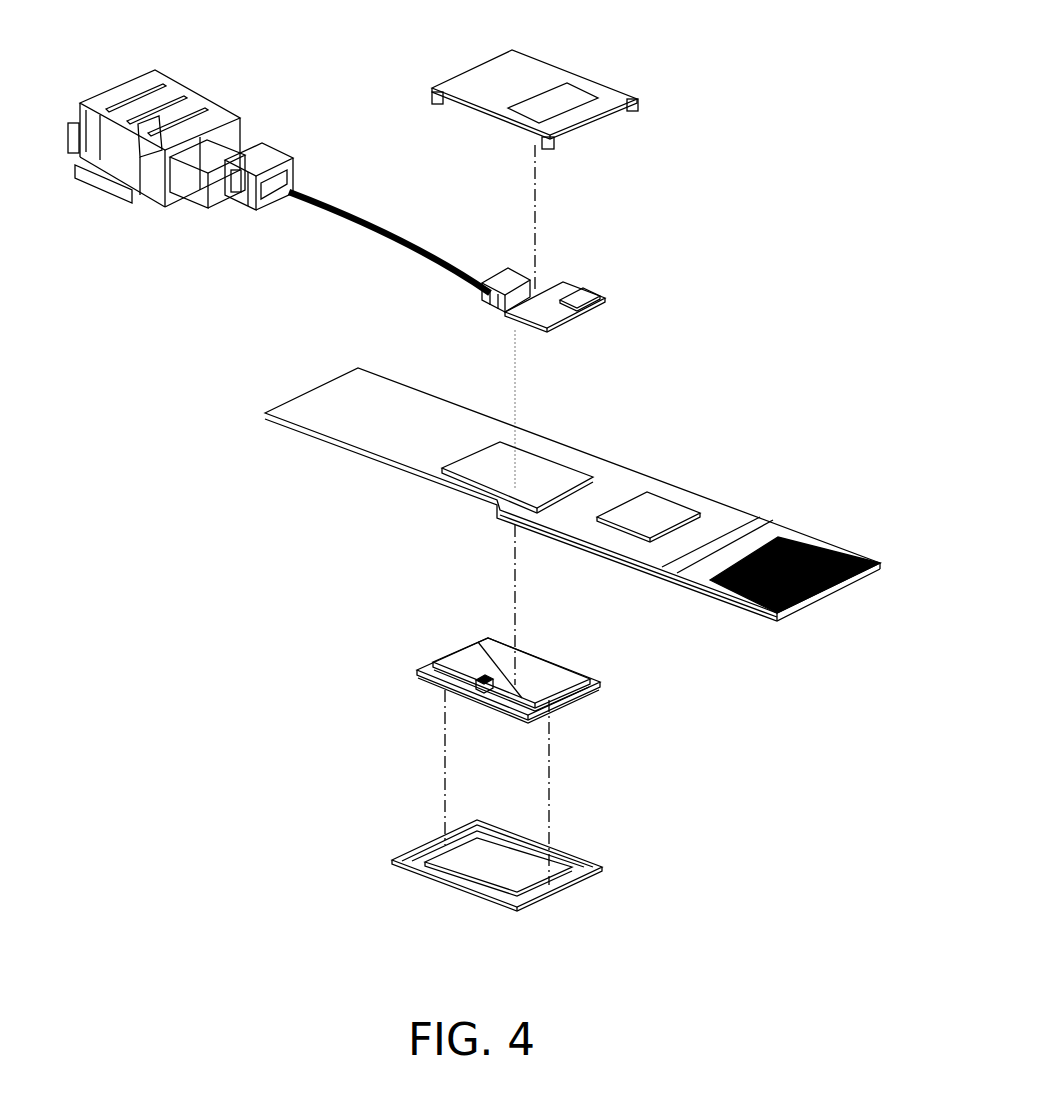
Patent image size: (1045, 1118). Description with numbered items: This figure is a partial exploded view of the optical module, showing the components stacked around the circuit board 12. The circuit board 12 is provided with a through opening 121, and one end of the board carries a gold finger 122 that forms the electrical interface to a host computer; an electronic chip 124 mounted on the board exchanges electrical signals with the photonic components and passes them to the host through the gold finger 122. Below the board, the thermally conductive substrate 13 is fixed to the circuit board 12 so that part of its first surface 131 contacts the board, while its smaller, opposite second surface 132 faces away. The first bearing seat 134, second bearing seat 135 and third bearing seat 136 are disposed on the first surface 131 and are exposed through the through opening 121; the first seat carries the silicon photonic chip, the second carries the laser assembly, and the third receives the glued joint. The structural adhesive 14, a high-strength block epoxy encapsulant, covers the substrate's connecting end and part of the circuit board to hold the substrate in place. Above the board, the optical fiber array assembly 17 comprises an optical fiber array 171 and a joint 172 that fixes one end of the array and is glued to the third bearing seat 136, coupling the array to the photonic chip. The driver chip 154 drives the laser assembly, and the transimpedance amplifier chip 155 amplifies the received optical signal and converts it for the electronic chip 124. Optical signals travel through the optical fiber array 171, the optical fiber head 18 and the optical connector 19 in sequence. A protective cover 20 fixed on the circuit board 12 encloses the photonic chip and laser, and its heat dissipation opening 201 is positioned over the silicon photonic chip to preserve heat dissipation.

The circuit board 12 is at (585, 494).
The through opening 121 is at (545, 468).
The gold finger 122 is at (837, 545).
The electronic chip 124 is at (652, 502).
The thermally conductive substrate 13 is at (444, 670).
The first surface 131 is at (447, 668).
The second surface 132 is at (433, 690).
The first bearing seat 134 is at (553, 672).
The second bearing seat 135 is at (492, 665).
The third bearing seat 136 is at (488, 680).
The structural adhesive 14 is at (417, 845).
The driver chip 154 is at (578, 292).
The transimpedance amplifier chip 155 is at (557, 303).
The optical fiber array assembly 17 is at (409, 203).
The optical fiber array 171 is at (390, 241).
The joint 172 is at (500, 276).
The optical fiber head 18 is at (242, 205).
The optical connector 19 is at (122, 187).
The protective cover 20 is at (535, 75).
The heat dissipation opening 201 is at (562, 99).